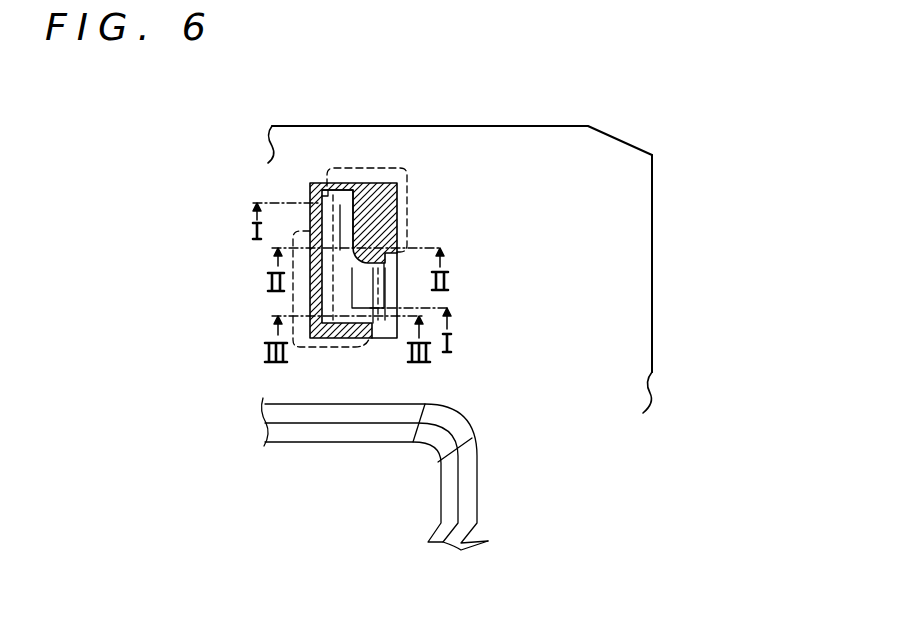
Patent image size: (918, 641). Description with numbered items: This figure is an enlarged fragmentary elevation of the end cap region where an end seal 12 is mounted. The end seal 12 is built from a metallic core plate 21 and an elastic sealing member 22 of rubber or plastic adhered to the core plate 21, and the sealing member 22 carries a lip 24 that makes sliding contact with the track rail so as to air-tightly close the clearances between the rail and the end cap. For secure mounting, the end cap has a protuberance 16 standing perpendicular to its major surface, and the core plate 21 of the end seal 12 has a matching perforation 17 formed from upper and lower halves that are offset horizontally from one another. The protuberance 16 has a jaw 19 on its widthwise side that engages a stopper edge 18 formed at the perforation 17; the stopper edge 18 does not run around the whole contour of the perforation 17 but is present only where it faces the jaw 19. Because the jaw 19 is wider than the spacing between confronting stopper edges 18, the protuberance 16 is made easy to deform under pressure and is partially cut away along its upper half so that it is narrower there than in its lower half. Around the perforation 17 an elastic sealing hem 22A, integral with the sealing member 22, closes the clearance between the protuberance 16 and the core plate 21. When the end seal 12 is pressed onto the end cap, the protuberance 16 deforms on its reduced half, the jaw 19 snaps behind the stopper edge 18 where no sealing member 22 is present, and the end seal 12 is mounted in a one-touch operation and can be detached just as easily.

The end seal 12 is at (504, 243).
The protuberance 16 is at (340, 225).
The perforation 17 is at (380, 168).
The stopper edge 18 is at (327, 192).
The jaw 19 is at (327, 192).
The core plate 21 is at (681, 284).
The elastic sealing member 22 is at (647, 284).
The elastic sealing hem 22A is at (380, 207).
The lip 24 is at (372, 433).